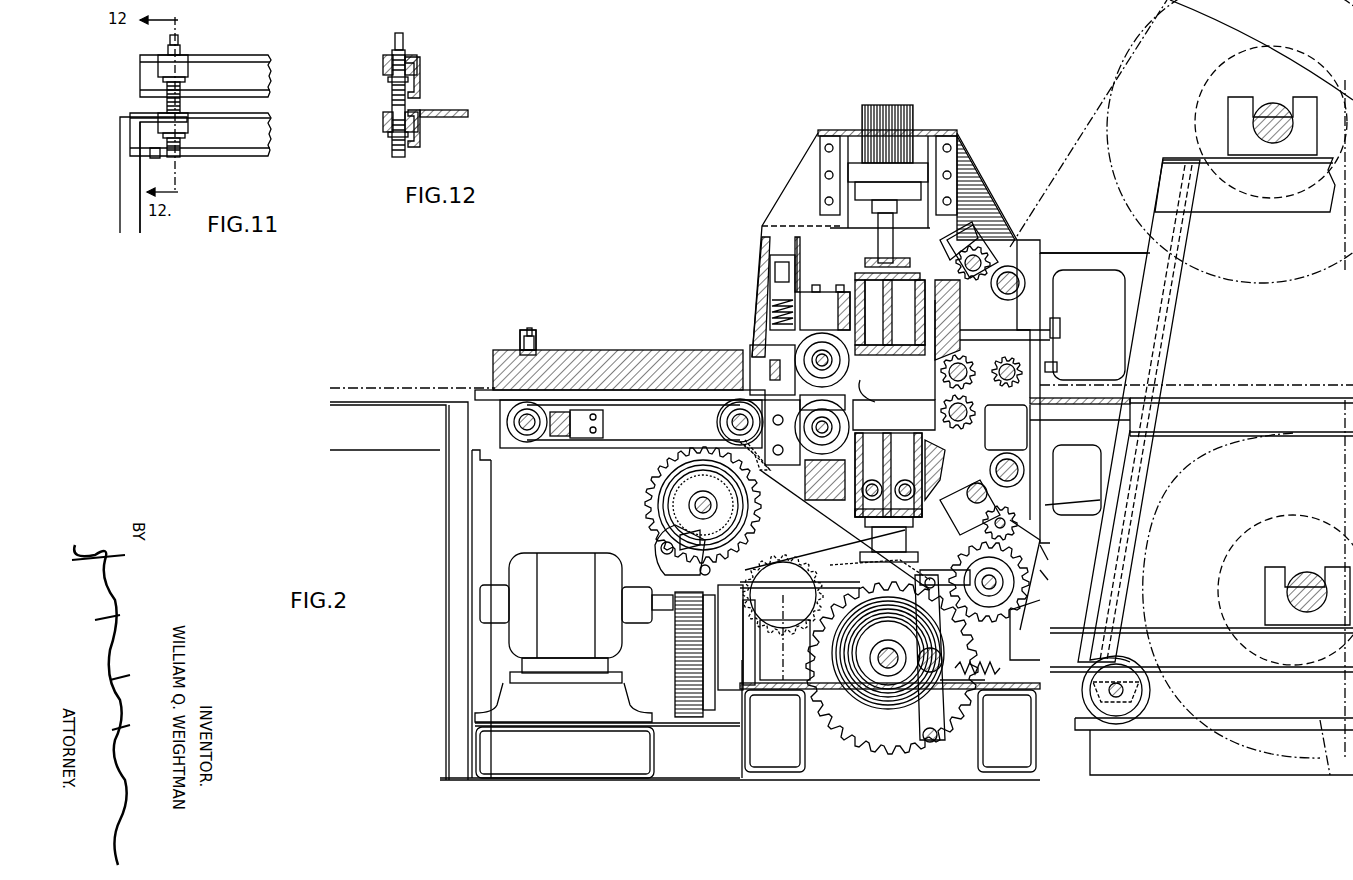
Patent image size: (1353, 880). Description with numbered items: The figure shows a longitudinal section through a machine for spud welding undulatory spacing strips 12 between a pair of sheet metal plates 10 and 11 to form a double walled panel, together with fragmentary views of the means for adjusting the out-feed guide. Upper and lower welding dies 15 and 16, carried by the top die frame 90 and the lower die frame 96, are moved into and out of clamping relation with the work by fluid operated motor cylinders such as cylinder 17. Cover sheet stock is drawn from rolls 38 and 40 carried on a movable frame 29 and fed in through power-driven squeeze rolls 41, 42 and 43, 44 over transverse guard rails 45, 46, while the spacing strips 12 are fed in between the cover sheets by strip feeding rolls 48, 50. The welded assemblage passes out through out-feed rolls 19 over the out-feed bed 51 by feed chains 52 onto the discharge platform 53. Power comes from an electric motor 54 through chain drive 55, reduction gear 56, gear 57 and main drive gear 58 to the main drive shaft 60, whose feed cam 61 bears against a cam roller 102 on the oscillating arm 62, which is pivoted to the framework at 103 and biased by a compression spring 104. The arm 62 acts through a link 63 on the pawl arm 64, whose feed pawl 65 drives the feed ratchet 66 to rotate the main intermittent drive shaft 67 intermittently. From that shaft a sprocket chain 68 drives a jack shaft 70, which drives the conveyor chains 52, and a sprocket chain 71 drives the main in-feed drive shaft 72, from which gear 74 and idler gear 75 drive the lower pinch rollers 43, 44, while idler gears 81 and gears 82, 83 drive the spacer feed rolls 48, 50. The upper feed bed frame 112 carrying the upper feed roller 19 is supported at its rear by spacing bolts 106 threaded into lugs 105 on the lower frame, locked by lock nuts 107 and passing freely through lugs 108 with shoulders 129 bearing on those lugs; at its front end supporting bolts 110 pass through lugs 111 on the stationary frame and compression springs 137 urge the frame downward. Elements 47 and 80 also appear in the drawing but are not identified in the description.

In FIG. 2, the cover sheet 10 is at (1085, 128).
In FIG. 2, the sheet metal plate 11 is at (1140, 622).
In FIG. 2, the undulatory spacing strip 12 is at (1248, 392).
In FIG. 2, the upper welding die 15 is at (835, 255).
In FIG. 2, the lower welding die 16 is at (825, 300).
In FIG. 2, the fluid operated motor cylinder 17 is at (913, 122).
In FIG. 2, the out-feed roll 19 is at (780, 345).
In FIG. 2, the movable frame 29 is at (1222, 660).
In FIG. 2, the roll of sheet metal material 38 is at (1140, 35).
In FIG. 2, the roll of sheet metal material 40 is at (1325, 775).
In FIG. 2, the feed-in squeeze roll 41 is at (985, 250).
In FIG. 2, the feed-in squeeze roll 42 is at (1015, 272).
In FIG. 2, the in-feed pinch roller 43 is at (1010, 535).
In FIG. 2, the in-feed pinch roller 44 is at (1100, 470).
In FIG. 2, the transverse guard rail 45 is at (1010, 322).
In FIG. 2, the transverse guard rail 46 is at (975, 439).
In FIG. 2, the rail 47 is at (1295, 395).
In FIG. 2, the strip feeding roll 48 is at (1040, 350).
In FIG. 2, the strip feeding roll 50 is at (985, 421).
In FIG. 12, the out-feed bed 51 is at (440, 117).
In FIG. 2, the out-feed bed 51 is at (605, 440).
In FIG. 2, the feed chain 52 is at (615, 400).
In FIG. 2, the discharge platform 53 is at (370, 400).
In FIG. 2, the electric motor 54 is at (556, 565).
In FIG. 2, the chain drive 55 is at (673, 635).
In FIG. 2, the reduction gear 56 is at (740, 690).
In FIG. 2, the gear 57 is at (790, 645).
In FIG. 2, the main drive gear 58 is at (850, 728).
In FIG. 2, the main drive shaft 60 is at (890, 665).
In FIG. 2, the feed cam 61 is at (865, 660).
In FIG. 2, the feed ratchet actuating arm 62 is at (965, 713).
In FIG. 2, the link 63 is at (770, 590).
In FIG. 2, the pawl arm 64 is at (660, 545).
In FIG. 2, the feed pawl 65 is at (665, 570).
In FIG. 2, the feed ratchet 66 is at (655, 478).
In FIG. 2, the main intermittent drive shaft 67 is at (690, 500).
In FIG. 2, the sprocket chain 68 is at (720, 400).
In FIG. 2, the jack shaft 70 is at (738, 398).
In FIG. 2, the sprocket chain 71 is at (1040, 589).
In FIG. 2, the main in-feed drive shaft 72 is at (1030, 605).
In FIG. 2, the gear 74 is at (1058, 566).
In FIG. 2, the idler gear 75 is at (1050, 506).
In FIG. 2, the member 80 is at (1040, 370).
In FIG. 2, the idler gear 81 is at (1035, 392).
In FIG. 2, the gear 82 is at (1040, 332).
In FIG. 2, the gear 83 is at (1045, 415).
In FIG. 2, the top die frame 90 is at (968, 235).
In FIG. 2, the lower die frame 96 is at (1045, 459).
In FIG. 2, the cam roller 102 is at (1012, 650).
In FIG. 2, the pivot 103 is at (930, 745).
In FIG. 2, the compression spring 104 is at (1048, 640).
In FIG. 11, the lug 105 is at (158, 123).
In FIG. 12, the lug 105 is at (383, 122).
In FIG. 11, the spacing bolt 106 is at (167, 97).
In FIG. 12, the spacing bolt 106 is at (392, 98).
In FIG. 2, the spacing bolt 106 is at (490, 390).
In FIG. 11, the lock nut 107 is at (163, 136).
In FIG. 12, the lock nut 107 is at (388, 136).
In FIG. 11, the lug 108 is at (158, 66).
In FIG. 12, the lug 108 is at (383, 66).
In FIG. 2, the lug 108 is at (522, 348).
In FIG. 2, the supporting bolt 110 is at (790, 330).
In FIG. 2, the lug 111 is at (770, 275).
In FIG. 11, the top feed frame 112 is at (240, 65).
In FIG. 12, the top feed frame 112 is at (420, 62).
In FIG. 2, the top feed frame 112 is at (620, 336).
In FIG. 11, the shoulder 129 is at (163, 80).
In FIG. 12, the shoulder 129 is at (388, 80).
In FIG. 2, the shoulder 129 is at (545, 365).
In FIG. 2, the compression spring 137 is at (800, 350).